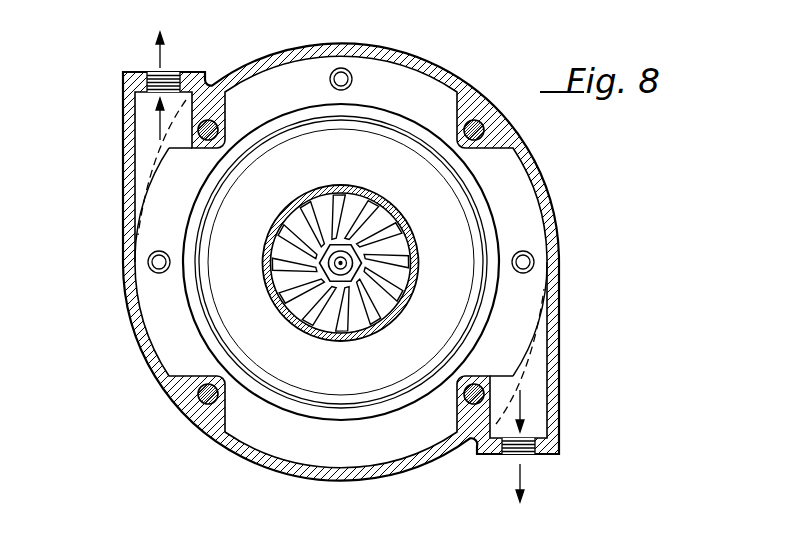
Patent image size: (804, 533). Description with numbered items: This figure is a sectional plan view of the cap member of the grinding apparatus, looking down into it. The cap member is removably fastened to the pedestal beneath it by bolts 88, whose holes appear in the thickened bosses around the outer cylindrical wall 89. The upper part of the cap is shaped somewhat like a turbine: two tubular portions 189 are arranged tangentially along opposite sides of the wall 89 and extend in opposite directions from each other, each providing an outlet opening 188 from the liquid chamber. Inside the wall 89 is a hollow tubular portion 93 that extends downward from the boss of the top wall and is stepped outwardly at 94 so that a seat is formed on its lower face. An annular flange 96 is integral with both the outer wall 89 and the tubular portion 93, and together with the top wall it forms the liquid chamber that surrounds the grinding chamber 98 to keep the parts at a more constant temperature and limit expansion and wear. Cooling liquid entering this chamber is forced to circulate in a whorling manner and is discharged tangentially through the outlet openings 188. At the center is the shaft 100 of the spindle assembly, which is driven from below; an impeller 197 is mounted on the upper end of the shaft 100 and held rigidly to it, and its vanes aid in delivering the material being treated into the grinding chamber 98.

The bolts 88 is at (212, 118).
The upstanding cylindrical wall 89 is at (127, 300).
The hollow tubular portion 93 is at (185, 235).
The outward step 94 is at (474, 252).
The annular flange 96 is at (358, 458).
The grinding chamber 98 is at (294, 294).
The shaft 100 is at (407, 301).
The outlet openings 188 is at (178, 72).
The tubular portions 189 is at (123, 165).
The impeller 197 is at (283, 230).